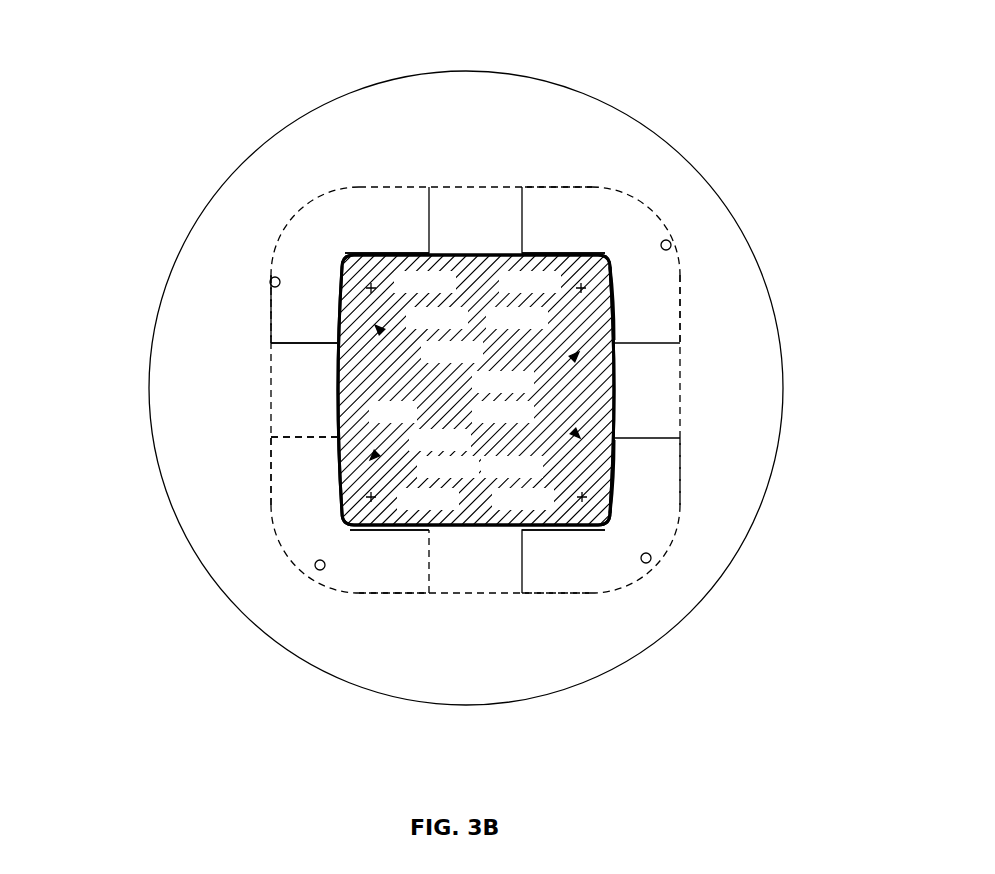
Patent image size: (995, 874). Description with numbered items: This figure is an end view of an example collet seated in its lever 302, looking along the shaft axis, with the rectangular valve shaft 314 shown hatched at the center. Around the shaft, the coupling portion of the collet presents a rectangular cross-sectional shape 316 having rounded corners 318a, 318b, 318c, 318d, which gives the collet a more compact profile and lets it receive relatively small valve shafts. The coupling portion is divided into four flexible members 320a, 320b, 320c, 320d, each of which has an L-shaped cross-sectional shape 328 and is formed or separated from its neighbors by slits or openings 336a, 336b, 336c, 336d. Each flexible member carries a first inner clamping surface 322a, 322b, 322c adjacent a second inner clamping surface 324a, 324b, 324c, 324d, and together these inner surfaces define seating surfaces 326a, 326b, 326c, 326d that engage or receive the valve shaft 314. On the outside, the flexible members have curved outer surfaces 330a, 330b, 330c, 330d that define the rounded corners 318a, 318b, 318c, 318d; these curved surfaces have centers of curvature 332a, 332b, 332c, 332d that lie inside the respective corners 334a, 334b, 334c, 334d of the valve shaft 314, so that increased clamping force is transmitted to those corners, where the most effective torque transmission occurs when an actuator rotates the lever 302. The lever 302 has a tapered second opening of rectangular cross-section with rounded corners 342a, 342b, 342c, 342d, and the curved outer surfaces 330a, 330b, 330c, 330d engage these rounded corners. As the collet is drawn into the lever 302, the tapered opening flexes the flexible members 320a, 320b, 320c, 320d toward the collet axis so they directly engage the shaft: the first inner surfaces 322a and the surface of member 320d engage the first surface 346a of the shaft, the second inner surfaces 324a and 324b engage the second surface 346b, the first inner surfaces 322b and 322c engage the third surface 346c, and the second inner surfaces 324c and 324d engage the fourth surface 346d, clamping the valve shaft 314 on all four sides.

The lever 302 is at (566, 86).
The rectangular valve shaft 314 is at (612, 353).
The rectangular cross-sectional shape 316 is at (287, 363).
The rounded corner 318a is at (277, 252).
The rounded corner 318b is at (700, 186).
The rounded corner 318c is at (677, 507).
The rounded corner 318d is at (280, 532).
The flexible member 320a is at (337, 303).
The flexible member 320b is at (650, 297).
The flexible member 320c is at (547, 580).
The flexible member 320d is at (367, 585).
The first inner clamping surface 322a is at (300, 343).
The first inner clamping surface 322b is at (617, 303).
The first inner clamping surface 322c is at (612, 492).
The second inner clamping surface 324a is at (401, 253).
The second inner clamping surface 324b is at (545, 253).
The second inner clamping surface 324c is at (548, 531).
The second inner clamping surface 324d is at (407, 531).
The seating surface 326a is at (380, 330).
The seating surface 326b is at (574, 357).
The seating surface 326c is at (575, 432).
The seating surface 326d is at (376, 455).
The L-shaped cross-sectional shape 328 is at (328, 433).
The curved outer surface 330a is at (302, 215).
The curved outer surface 330b is at (645, 207).
The curved outer surface 330c is at (673, 533).
The curved outer surface 330d is at (287, 550).
The center of curvature 332a is at (373, 290).
The center of curvature 332b is at (580, 290).
The center of curvature 332c is at (582, 495).
The center of curvature 332d is at (373, 494).
The corner of the valve shaft 334a is at (348, 262).
The corner of the valve shaft 334b is at (602, 260).
The corner of the valve shaft 334c is at (603, 521).
The corner of the valve shaft 334d is at (346, 518).
The slit 336a is at (285, 390).
The slit 336b is at (495, 197).
The slit 336c is at (657, 419).
The slit 336d is at (488, 580).
The rounded corner of the second opening 342a is at (273, 290).
The rounded corner of the second opening 342b is at (667, 248).
The rounded corner of the second opening 342c is at (647, 562).
The rounded corner of the second opening 342d is at (320, 570).
The first surface of the valve shaft 346a is at (340, 410).
The second surface of the valve shaft 346b is at (470, 253).
The third surface of the valve shaft 346c is at (612, 378).
The fourth surface of the valve shaft 346d is at (455, 528).